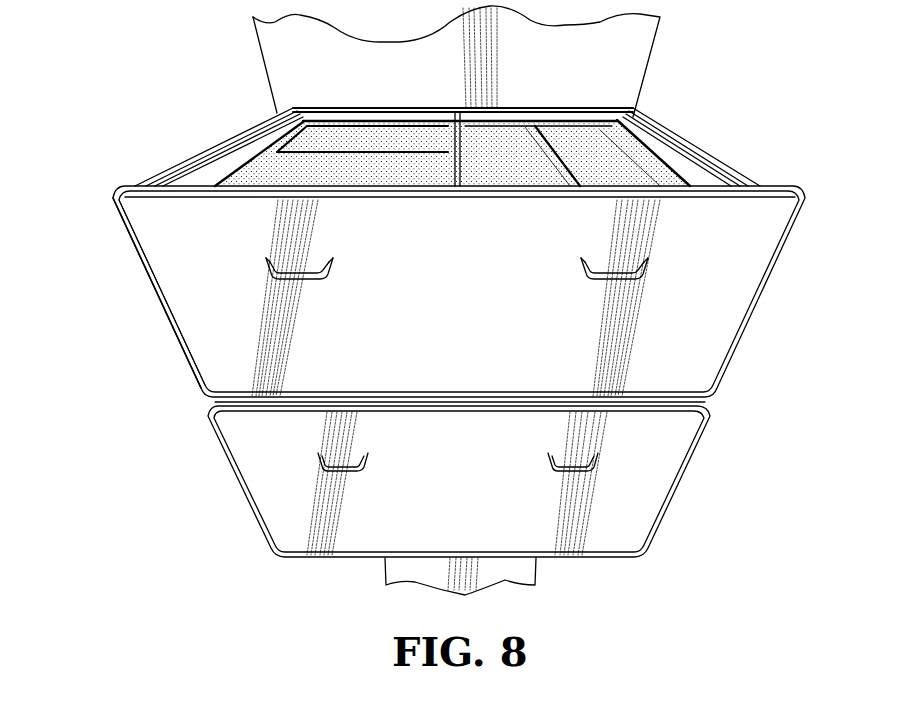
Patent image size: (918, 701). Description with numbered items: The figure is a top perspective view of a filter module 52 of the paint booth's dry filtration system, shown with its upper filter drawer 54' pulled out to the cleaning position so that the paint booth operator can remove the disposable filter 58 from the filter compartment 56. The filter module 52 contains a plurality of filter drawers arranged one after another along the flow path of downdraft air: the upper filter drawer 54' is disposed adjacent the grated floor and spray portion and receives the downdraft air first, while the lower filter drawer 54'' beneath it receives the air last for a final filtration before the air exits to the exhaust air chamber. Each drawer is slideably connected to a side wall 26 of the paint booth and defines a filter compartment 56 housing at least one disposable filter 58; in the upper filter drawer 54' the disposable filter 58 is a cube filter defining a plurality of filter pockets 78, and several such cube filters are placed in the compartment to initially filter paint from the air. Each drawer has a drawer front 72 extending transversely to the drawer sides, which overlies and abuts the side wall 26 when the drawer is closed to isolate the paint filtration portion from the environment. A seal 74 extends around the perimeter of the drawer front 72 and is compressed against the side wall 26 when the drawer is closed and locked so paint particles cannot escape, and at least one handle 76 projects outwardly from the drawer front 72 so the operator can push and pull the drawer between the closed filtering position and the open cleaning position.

The side wall 26 is at (295, 65).
The filter module 52 is at (653, 123).
The filter compartment 56 is at (223, 165).
The disposable filter 58 is at (668, 160).
The filter pockets 78 is at (592, 145).
The upper filter drawer 54' is at (425, 254).
The lower filter drawer 54'' is at (492, 479).
The seal 74 is at (138, 262).
The drawer front 72 is at (178, 278).
The handle 76 is at (267, 268).